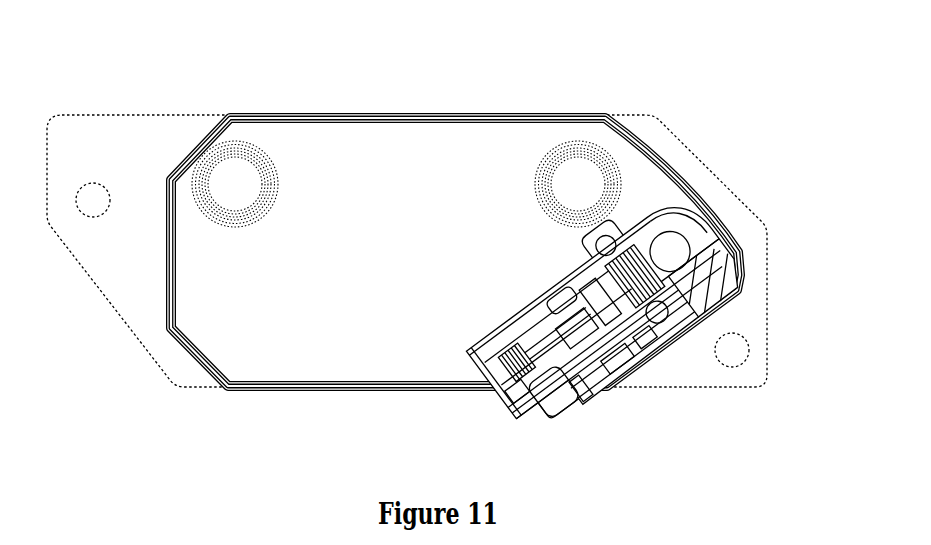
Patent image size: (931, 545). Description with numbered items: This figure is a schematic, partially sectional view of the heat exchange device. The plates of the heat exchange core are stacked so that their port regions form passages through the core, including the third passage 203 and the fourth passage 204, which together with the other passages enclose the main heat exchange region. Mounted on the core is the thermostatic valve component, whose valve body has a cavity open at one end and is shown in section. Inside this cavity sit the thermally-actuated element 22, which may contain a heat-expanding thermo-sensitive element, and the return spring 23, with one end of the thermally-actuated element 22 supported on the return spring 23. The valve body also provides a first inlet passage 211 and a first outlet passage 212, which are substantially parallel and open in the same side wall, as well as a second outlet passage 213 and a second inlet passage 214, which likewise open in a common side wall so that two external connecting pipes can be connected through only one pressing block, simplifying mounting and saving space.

The third passage 203 is at (233, 176).
The fourth passage 204 is at (587, 166).
The first inlet passage 211 is at (562, 306).
The first outlet passage 212 is at (670, 252).
The second outlet passage 213 is at (566, 392).
The second inlet passage 214 is at (692, 287).
The thermally-actuated element 22 is at (598, 355).
The return spring 23 is at (657, 324).